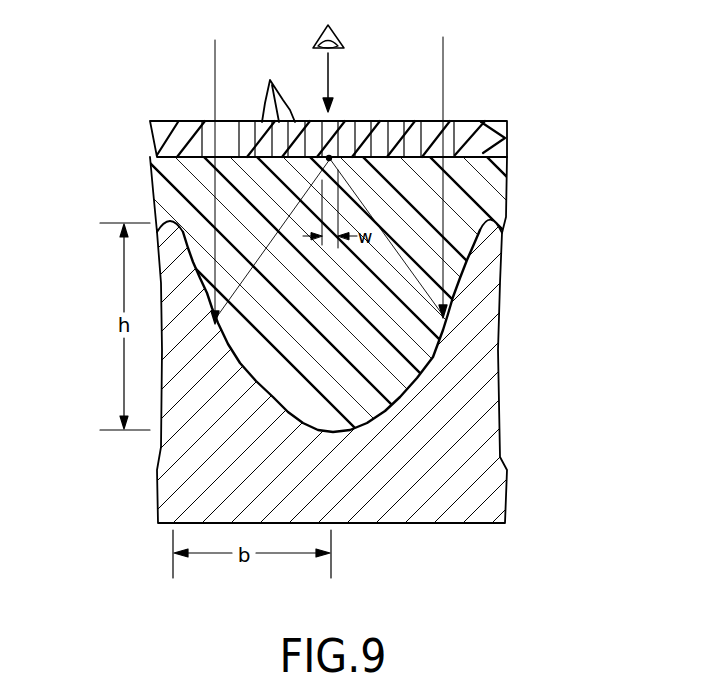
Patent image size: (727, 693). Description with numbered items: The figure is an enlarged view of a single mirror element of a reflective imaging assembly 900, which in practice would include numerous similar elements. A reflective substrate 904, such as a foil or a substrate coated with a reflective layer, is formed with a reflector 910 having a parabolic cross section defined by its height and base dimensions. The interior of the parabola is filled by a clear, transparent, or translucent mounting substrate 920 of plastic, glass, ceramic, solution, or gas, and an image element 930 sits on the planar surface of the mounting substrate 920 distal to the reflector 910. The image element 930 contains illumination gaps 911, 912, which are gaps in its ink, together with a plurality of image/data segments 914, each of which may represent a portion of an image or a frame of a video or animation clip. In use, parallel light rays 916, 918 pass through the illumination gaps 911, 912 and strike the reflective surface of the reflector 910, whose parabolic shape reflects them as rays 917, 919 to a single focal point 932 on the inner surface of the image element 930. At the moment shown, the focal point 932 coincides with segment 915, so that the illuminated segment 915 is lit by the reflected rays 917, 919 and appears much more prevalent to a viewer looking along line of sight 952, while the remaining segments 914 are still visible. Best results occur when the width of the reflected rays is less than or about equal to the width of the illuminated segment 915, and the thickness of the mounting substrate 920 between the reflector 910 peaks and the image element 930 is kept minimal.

The assembly 900 is at (97, 125).
The reflective substrate 904 is at (450, 491).
The reflector 910 is at (413, 384).
The illumination gap 911 is at (203, 120).
The illumination gap 912 is at (450, 120).
The image/data segments 914 is at (270, 87).
The illuminated segment 915 is at (333, 120).
The parallel light ray 916 is at (215, 77).
The reflected light ray 917 is at (257, 261).
The parallel light ray 918 is at (443, 55).
The reflected light ray 919 is at (383, 228).
The mounting substrate 920 is at (498, 188).
The image element 930 is at (506, 137).
The focal point 932 is at (327, 160).
The line of sight 952 is at (330, 80).